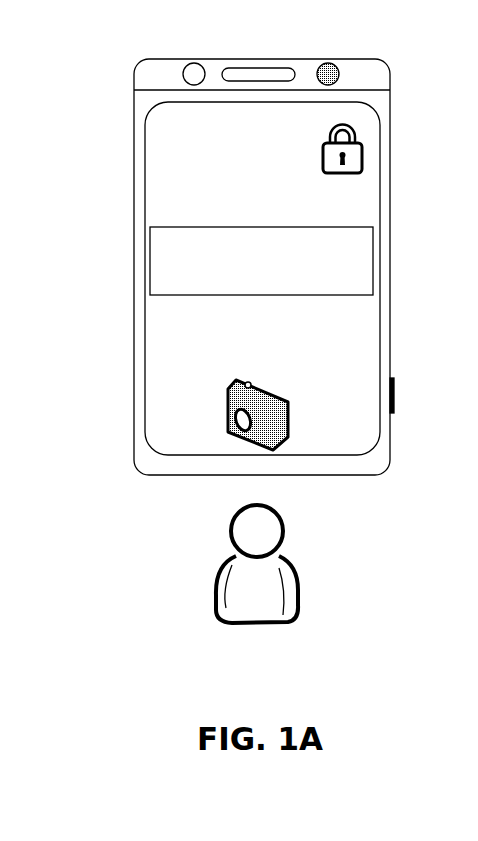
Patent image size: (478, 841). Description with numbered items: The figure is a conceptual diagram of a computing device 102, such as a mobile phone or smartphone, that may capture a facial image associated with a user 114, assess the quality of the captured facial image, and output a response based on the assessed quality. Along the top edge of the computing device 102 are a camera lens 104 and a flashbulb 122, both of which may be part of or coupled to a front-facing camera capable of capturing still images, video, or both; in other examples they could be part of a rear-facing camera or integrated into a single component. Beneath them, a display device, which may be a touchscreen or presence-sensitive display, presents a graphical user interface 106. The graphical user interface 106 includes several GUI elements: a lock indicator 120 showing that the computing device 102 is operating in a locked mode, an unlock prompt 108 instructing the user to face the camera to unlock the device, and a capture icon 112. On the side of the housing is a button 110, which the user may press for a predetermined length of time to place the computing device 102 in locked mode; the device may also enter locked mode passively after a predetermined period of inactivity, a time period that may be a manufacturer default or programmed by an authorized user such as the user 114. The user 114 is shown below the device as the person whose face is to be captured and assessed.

The computing device 102 is at (140, 62).
The camera lens 104 is at (338, 63).
The graphical user interface 106 is at (145, 175).
The unlock prompt 108 is at (373, 227).
The button 110 is at (395, 400).
The capture icon 112 is at (226, 390).
The user 114 is at (240, 696).
The lock indicator 120 is at (362, 145).
The flashbulb 122 is at (194, 63).